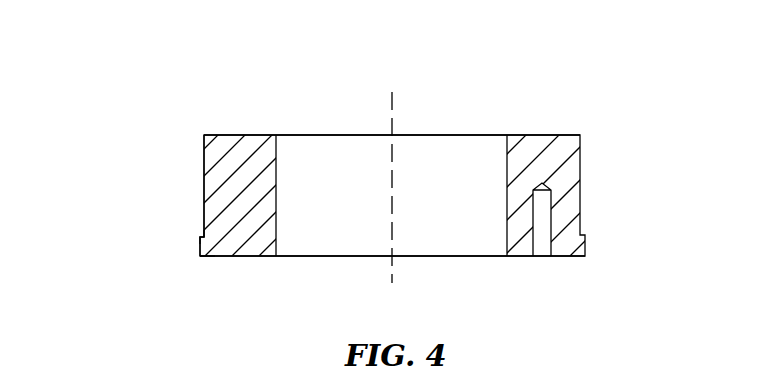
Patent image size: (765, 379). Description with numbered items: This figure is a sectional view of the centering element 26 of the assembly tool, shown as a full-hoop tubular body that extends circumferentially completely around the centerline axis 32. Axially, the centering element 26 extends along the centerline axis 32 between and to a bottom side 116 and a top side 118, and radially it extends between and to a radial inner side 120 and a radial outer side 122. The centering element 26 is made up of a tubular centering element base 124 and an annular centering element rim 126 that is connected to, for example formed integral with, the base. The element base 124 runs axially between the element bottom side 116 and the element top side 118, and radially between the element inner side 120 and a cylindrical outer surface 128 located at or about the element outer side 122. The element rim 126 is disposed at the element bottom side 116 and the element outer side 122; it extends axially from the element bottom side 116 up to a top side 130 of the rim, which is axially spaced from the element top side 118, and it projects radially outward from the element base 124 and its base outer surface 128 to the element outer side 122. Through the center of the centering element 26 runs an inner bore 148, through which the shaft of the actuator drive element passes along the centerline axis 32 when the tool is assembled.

The centering element 26 is at (146, 89).
The centerline axis 32 is at (395, 102).
The bottom side 116 is at (343, 257).
The top side 118 is at (318, 135).
The radial inner side 120 is at (277, 212).
The radial outer side 122 is at (202, 245).
The centering element base 124 is at (242, 118).
The centering element rim 126 is at (198, 270).
The outer surface 128 is at (203, 173).
The top side of the element rim 130 is at (203, 234).
The inner bore 148 is at (465, 165).